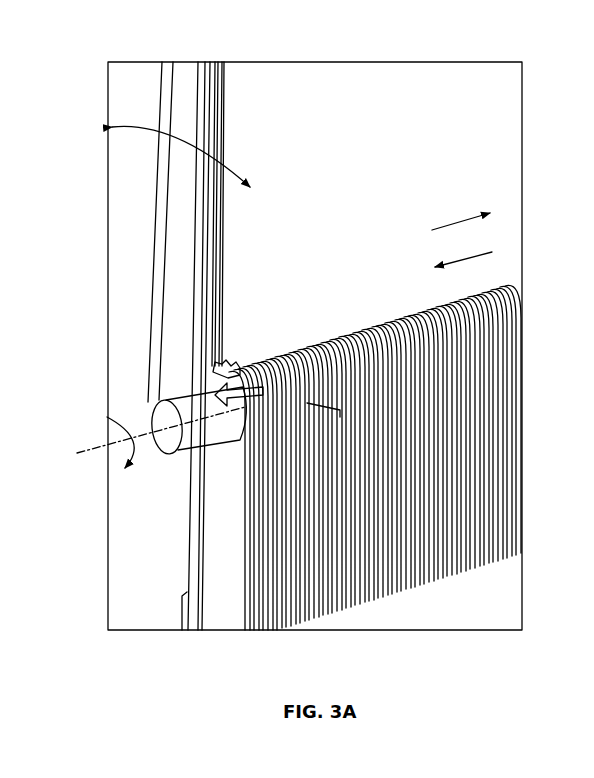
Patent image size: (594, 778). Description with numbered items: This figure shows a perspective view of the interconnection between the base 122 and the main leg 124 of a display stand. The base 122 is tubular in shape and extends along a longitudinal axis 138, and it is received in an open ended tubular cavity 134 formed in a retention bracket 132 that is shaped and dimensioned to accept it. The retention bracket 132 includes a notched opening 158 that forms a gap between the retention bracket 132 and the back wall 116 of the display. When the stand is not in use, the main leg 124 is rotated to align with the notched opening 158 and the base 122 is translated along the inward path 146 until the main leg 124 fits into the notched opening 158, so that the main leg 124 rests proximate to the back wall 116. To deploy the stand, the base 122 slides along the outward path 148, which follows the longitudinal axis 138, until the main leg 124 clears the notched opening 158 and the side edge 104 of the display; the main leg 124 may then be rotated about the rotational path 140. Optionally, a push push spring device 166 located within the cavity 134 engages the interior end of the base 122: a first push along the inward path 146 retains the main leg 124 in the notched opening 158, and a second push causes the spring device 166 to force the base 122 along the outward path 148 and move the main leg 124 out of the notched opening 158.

The side edge 104 is at (227, 102).
The back wall 116 is at (392, 168).
The base 122 is at (187, 452).
The main leg 124 is at (172, 296).
The retention bracket 132 is at (472, 360).
The tubular cavity 134 is at (337, 327).
The longitudinal axis 138 is at (93, 448).
The rotational path 140 is at (142, 122).
The inward path 146 is at (458, 222).
The outward path 148 is at (468, 257).
The notched opening 158 is at (229, 365).
The push push spring device 166 is at (327, 328).